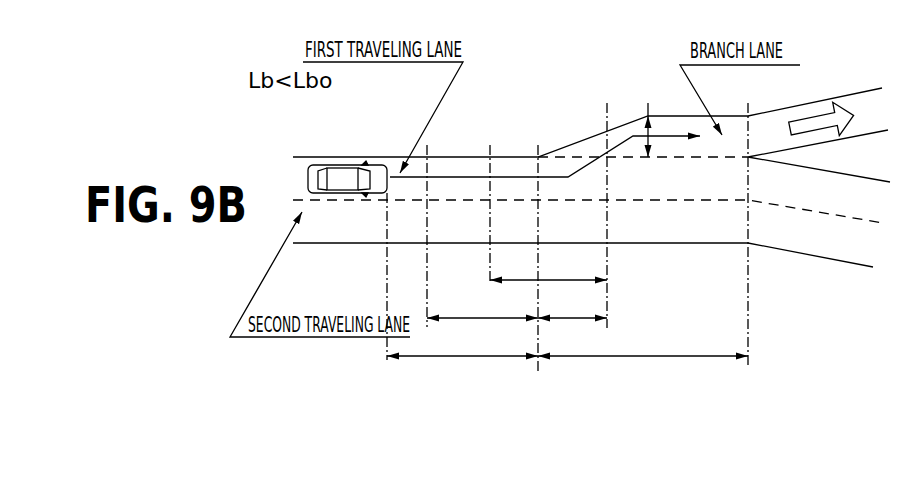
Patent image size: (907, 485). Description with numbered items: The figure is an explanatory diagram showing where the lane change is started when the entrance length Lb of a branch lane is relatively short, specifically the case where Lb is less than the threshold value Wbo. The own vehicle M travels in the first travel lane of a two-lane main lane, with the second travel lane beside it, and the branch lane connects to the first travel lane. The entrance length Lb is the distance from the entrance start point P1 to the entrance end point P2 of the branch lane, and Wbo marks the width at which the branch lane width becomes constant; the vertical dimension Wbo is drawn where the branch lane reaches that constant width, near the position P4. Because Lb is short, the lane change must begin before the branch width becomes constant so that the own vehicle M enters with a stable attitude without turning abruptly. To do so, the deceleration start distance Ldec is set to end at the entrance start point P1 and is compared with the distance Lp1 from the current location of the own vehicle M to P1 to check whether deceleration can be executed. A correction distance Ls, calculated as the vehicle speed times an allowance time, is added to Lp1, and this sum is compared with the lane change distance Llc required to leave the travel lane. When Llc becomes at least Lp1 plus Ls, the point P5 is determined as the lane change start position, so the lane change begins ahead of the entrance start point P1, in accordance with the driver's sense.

The own vehicle M is at (344, 165).
The entrance start point P1 is at (534, 246).
The entrance end point P2 is at (750, 221).
The branch lane widening completion position P4 is at (606, 203).
The lane change start position P5 is at (489, 201).
The lane width threshold value Wbo is at (653, 117).
The lane change distance Llc is at (548, 266).
The deceleration start distance Ldec is at (482, 305).
The correction distance of the lane change start position Ls is at (572, 305).
The distance to the entrance start point Lp1 is at (462, 343).
The entrance length Lb is at (643, 343).